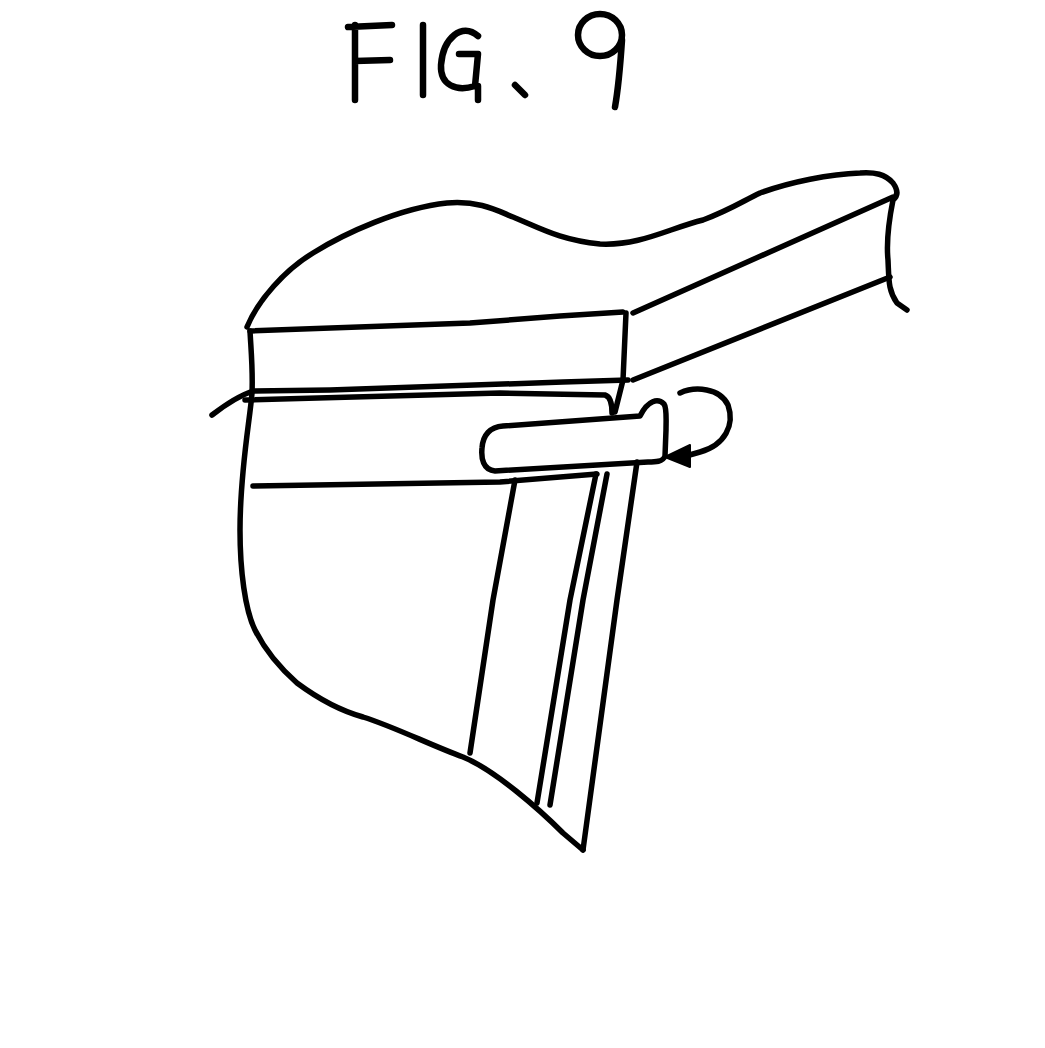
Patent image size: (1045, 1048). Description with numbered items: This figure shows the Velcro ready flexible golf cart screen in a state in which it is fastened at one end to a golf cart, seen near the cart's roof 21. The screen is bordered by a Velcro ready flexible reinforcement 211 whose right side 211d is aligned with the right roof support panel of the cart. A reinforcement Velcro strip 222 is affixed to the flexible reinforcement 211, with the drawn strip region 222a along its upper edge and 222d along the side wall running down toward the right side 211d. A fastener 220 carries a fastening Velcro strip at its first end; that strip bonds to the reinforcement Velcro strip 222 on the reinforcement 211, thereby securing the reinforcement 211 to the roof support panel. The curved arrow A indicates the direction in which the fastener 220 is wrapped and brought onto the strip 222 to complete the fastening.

The roof 21 is at (337, 353).
The Velcro ready flexible reinforcement 211 is at (297, 448).
The right side 211d is at (503, 747).
The reinforcement Velcro strip 222 is at (565, 417).
The top edge of flange 222a is at (470, 337).
The side wall of flange 222d is at (590, 760).
The fastener 220 is at (615, 448).
The rotation direction A is at (737, 424).